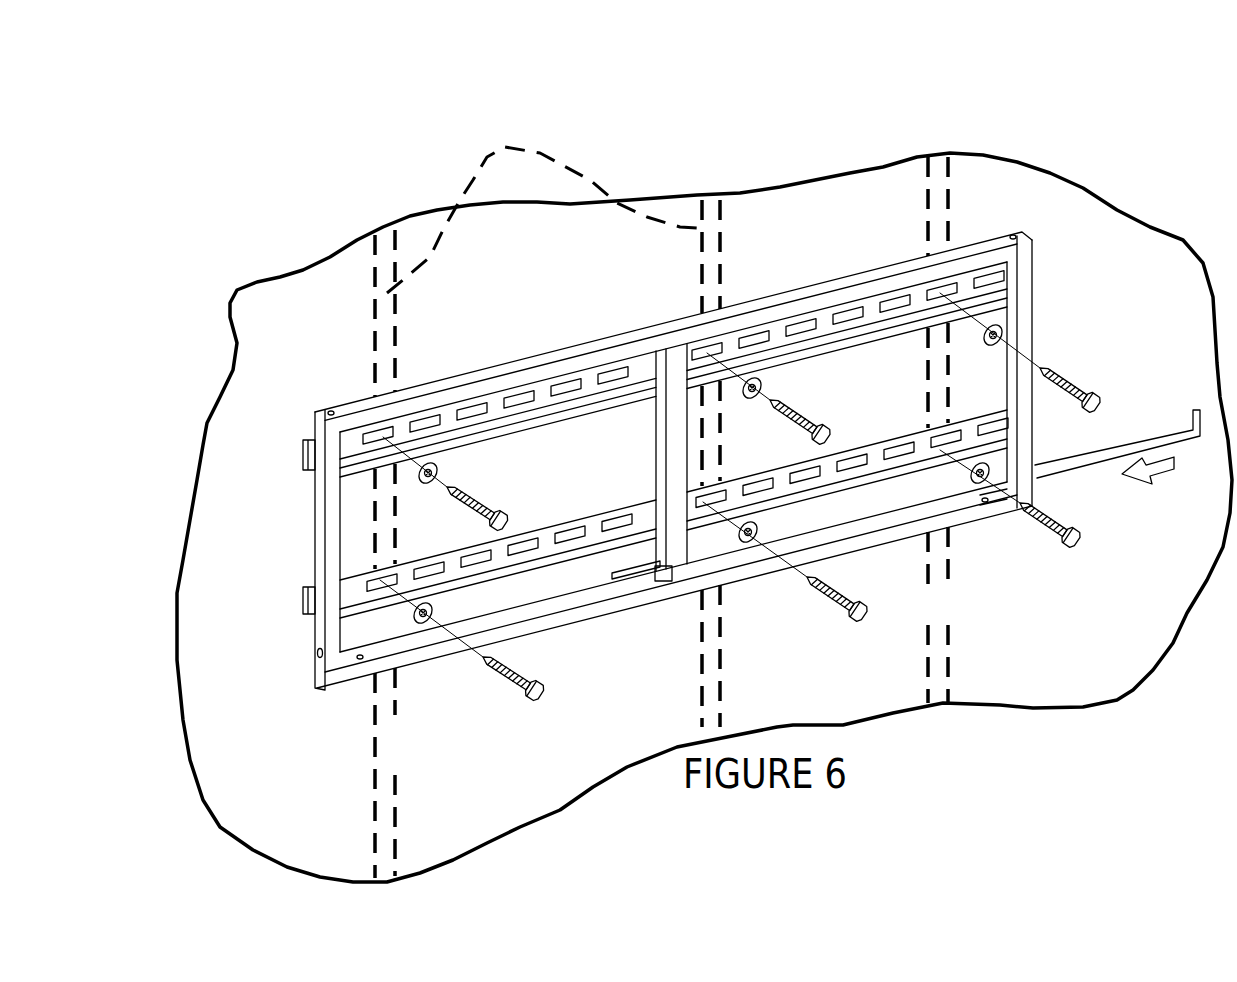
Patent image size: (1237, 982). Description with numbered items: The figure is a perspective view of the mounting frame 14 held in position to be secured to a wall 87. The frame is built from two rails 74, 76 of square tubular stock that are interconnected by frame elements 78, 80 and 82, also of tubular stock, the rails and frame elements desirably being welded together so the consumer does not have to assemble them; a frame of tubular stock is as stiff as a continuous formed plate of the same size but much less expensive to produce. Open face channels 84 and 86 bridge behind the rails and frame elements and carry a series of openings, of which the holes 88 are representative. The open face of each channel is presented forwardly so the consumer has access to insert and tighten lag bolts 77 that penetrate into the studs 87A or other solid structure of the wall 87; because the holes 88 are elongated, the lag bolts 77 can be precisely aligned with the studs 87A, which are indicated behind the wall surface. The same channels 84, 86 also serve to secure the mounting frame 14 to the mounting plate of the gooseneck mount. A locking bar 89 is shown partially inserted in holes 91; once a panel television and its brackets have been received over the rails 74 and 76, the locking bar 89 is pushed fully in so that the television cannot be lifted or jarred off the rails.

The mounting frame 14 is at (678, 396).
The rail 74 is at (540, 357).
The rail 76 is at (596, 612).
The lag bolts 77 is at (492, 667).
The frame element 78 is at (319, 634).
The frame element 80 is at (676, 417).
The frame element 82 is at (1026, 319).
The open face channel 84 is at (452, 436).
The open face channel 86 is at (532, 559).
The wall 87 is at (1080, 230).
The studs 87A is at (542, 199).
The holes 88 is at (760, 340).
The locking bar 89 is at (1113, 453).
The holes 91 is at (320, 657).